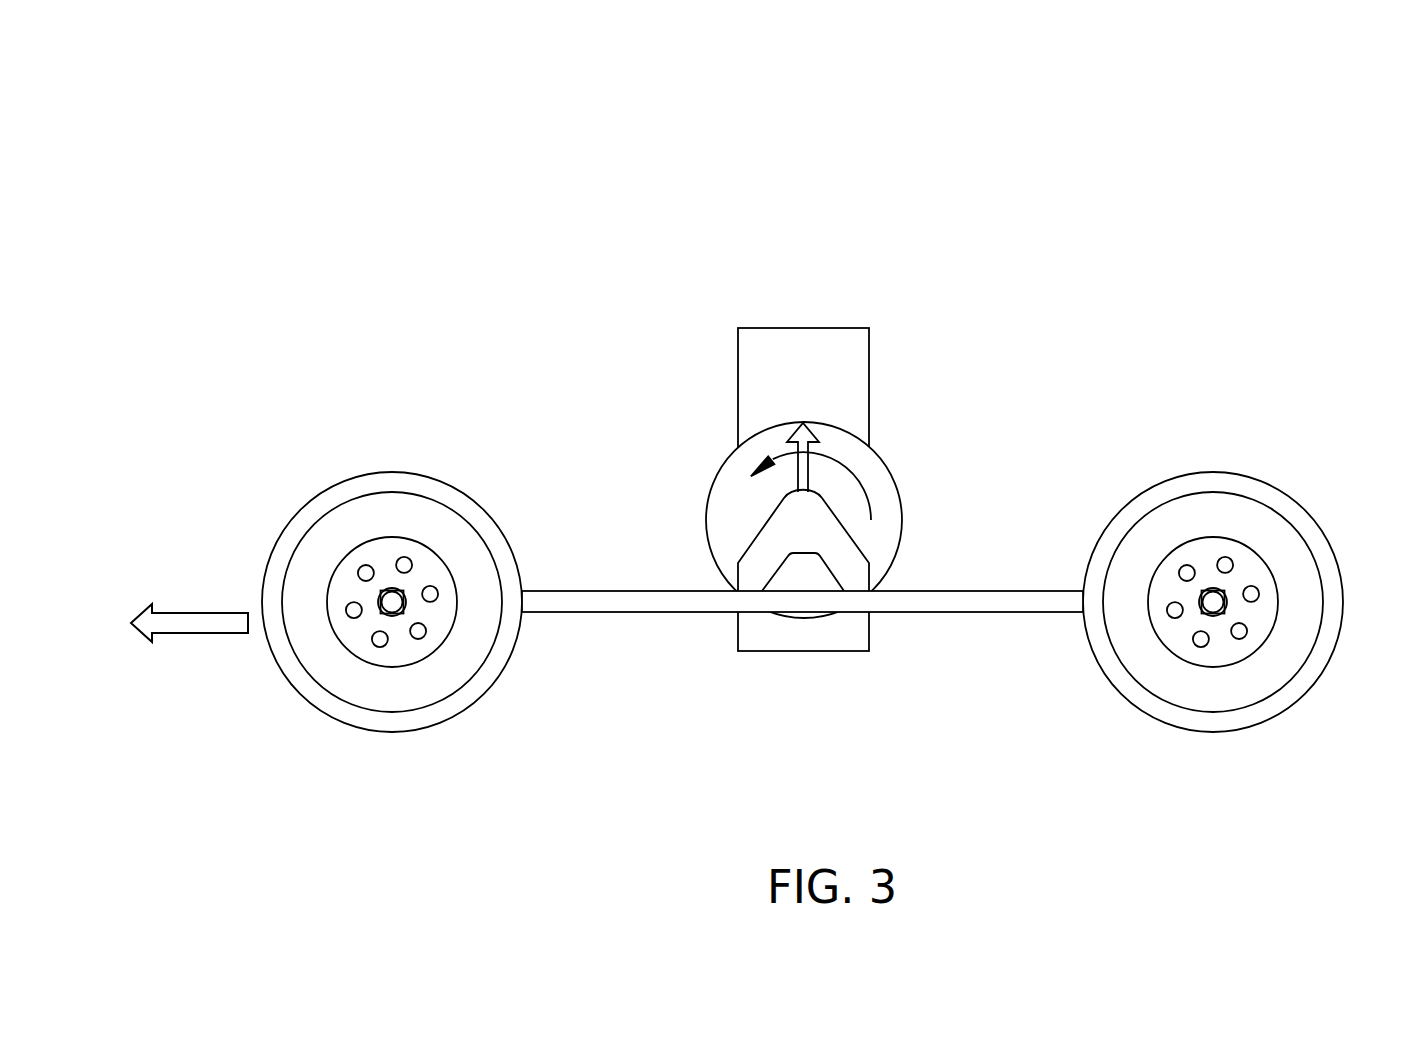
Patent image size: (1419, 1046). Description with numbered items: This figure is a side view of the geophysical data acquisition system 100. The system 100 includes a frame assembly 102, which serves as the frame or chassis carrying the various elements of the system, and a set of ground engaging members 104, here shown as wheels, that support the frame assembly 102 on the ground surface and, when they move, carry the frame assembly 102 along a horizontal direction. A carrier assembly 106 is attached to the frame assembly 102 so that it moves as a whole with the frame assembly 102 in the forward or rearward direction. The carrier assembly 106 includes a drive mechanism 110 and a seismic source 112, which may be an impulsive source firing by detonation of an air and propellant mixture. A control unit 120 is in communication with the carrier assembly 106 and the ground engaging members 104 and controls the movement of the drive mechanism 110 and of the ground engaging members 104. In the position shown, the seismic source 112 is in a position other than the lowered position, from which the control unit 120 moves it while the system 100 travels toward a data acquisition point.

The geophysical data acquisition system 100 is at (949, 198).
The frame assembly 102 is at (998, 603).
The set of ground engaging members 104 is at (1250, 487).
The carrier assembly 106 is at (707, 298).
The drive mechanism 110 is at (730, 452).
The seismic source 112 is at (792, 308).
The control unit 120 is at (820, 567).